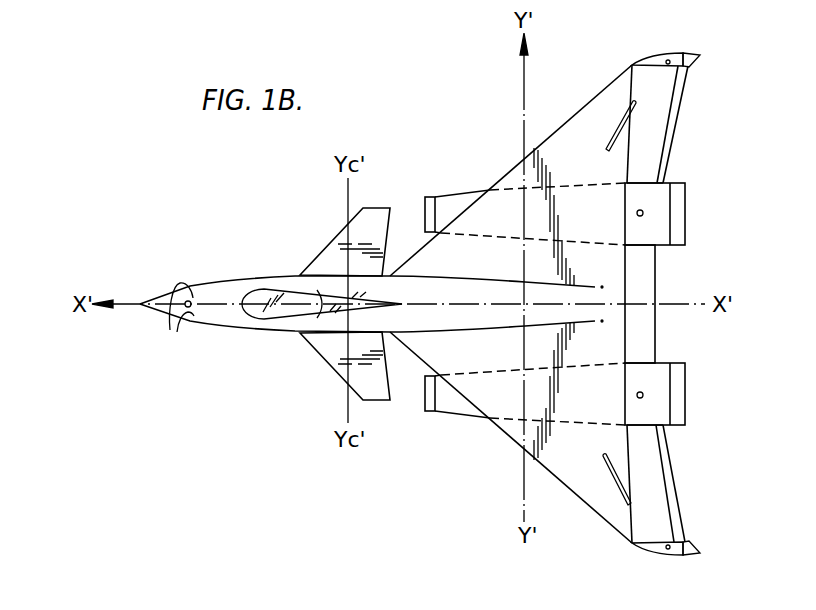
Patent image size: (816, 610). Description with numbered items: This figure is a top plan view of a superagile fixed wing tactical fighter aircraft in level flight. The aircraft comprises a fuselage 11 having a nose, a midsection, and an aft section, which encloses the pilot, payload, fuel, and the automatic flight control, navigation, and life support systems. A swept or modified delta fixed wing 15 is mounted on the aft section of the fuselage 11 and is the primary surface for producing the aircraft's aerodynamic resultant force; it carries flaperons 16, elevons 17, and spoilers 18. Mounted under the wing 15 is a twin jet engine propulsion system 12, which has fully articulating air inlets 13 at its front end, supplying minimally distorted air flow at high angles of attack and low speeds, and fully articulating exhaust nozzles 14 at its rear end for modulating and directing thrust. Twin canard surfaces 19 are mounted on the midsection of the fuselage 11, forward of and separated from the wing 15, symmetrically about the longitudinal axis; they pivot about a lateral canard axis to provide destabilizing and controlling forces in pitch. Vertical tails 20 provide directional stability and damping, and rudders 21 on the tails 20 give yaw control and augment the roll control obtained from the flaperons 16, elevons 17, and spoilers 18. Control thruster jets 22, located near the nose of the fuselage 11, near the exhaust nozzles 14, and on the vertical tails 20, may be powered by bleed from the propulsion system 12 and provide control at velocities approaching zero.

The fuselage 11 is at (224, 283).
The jet engine propulsion system 12 is at (507, 218).
The fully articulating air inlets 13 is at (425, 207).
The fully articulating exhaust nozzles 14 is at (678, 210).
The swept or modified delta fixed wing 15 is at (582, 165).
The flaperons 16 is at (658, 135).
The elevons 17 is at (657, 292).
The spoilers 18 is at (636, 108).
The canard surfaces 19 is at (325, 248).
The vertical tails 20 is at (655, 59).
The rudders 21 is at (689, 54).
The control thruster jets 22 is at (682, 31).